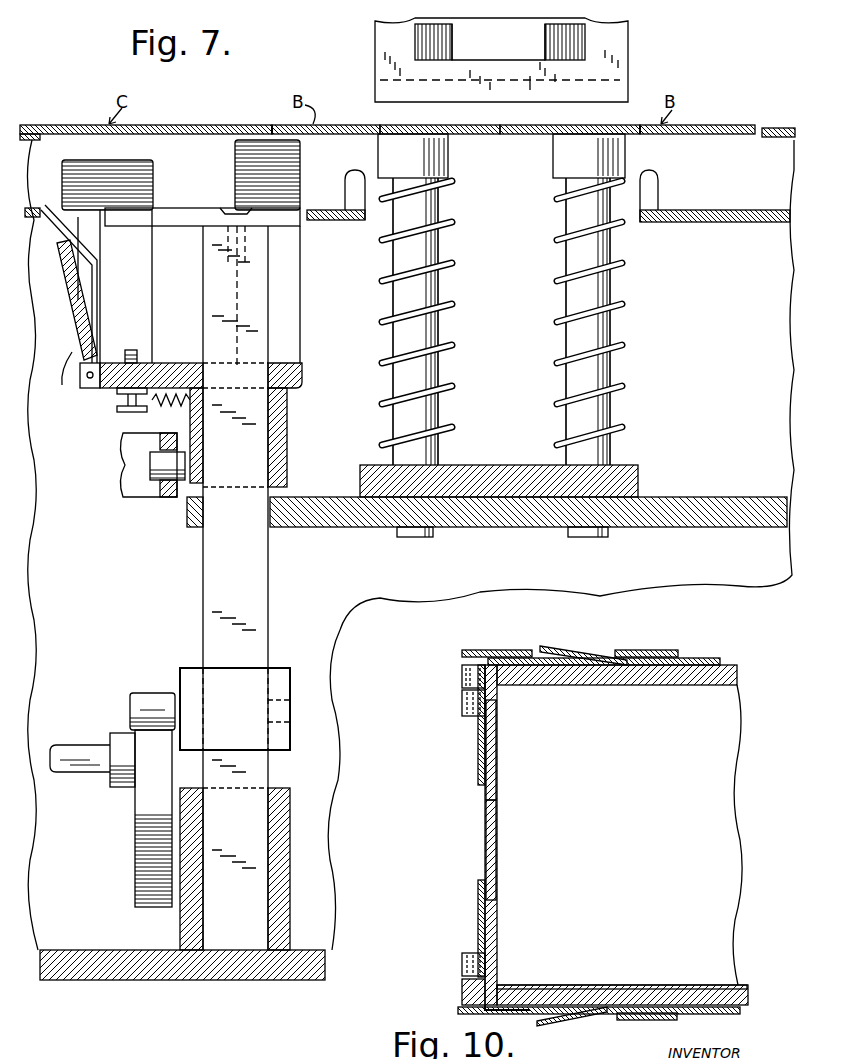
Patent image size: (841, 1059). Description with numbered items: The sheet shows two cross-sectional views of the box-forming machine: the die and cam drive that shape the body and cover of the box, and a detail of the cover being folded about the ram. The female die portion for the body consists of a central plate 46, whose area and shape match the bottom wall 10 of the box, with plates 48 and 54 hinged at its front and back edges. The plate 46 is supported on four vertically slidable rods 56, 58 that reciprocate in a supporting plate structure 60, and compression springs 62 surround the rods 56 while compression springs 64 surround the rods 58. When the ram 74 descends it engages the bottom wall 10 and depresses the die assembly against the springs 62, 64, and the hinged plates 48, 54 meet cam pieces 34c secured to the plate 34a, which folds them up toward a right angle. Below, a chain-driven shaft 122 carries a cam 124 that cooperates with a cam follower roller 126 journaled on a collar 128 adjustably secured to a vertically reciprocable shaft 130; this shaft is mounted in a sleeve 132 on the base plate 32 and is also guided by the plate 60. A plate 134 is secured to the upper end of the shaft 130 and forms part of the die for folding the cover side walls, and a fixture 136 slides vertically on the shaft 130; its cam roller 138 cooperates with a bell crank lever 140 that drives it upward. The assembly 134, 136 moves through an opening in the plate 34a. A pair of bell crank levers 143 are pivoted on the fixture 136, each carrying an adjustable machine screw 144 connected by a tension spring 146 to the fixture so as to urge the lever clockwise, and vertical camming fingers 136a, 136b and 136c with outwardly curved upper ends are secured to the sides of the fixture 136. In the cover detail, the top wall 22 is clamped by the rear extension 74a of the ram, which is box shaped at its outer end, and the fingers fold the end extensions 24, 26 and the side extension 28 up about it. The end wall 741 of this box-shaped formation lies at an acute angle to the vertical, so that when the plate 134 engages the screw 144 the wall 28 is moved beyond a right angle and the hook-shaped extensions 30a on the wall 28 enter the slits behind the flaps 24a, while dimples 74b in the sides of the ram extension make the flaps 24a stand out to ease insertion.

In FIG. 7, the bottom wall 10 is at (512, 130).
In FIG. 7, the top wall 22 is at (192, 124).
In FIG. 10, the end extension 24 is at (708, 1014).
In FIG. 10, the flap 24a is at (620, 1005).
In FIG. 10, the end extension 26 is at (705, 662).
In FIG. 10, the side extension 28 is at (485, 835).
In FIG. 10, the hook shaped extension 30a is at (533, 1002).
In FIG. 7, the base plate 32 is at (192, 980).
In FIG. 7, the plate 34a is at (333, 222).
In FIG. 7, the cam piece 34c is at (350, 192).
In FIG. 7, the central plate 46 is at (498, 136).
In FIG. 7, the hinged plate 48 is at (695, 136).
In FIG. 7, the hinged plate 54 is at (322, 135).
In FIG. 7, the rod 56 is at (428, 292).
In FIG. 7, the rod 58 is at (578, 292).
In FIG. 7, the supporting plate structure 60 is at (645, 506).
In FIG. 7, the compression spring 62 is at (446, 352).
In FIG. 7, the compression spring 64 is at (560, 362).
In FIG. 7, the ram 74 is at (620, 60).
In FIG. 10, the rear extension of the ram 74a is at (665, 833).
In FIG. 10, the dimple 74b is at (575, 668).
In FIG. 10, the end wall 741 is at (499, 760).
In FIG. 7, the shaft 122 is at (80, 750).
In FIG. 7, the cam 124 is at (135, 873).
In FIG. 7, the cam follower roller 126 is at (153, 692).
In FIG. 7, the collar 128 is at (290, 683).
In FIG. 7, the vertically reciprocable shaft 130 is at (268, 620).
In FIG. 7, the sleeve 132 is at (290, 815).
In FIG. 7, the plate 134 is at (194, 208).
In FIG. 7, the fixture 136 is at (290, 390).
In FIG. 7, the camming finger 136a is at (100, 287).
In FIG. 10, the camming finger 136a is at (480, 770).
In FIG. 10, the camming finger 136b is at (642, 1021).
In FIG. 7, the camming finger 136c is at (153, 165).
In FIG. 10, the camming finger 136c is at (630, 650).
In FIG. 7, the cam roller 138 is at (160, 484).
In FIG. 7, the bell crank lever 140 is at (124, 468).
In FIG. 7, the bell crank lever 143 is at (79, 376).
In FIG. 10, the bell crank lever 143 is at (462, 683).
In FIG. 7, the adjustable machine screw 144 is at (131, 350).
In FIG. 7, the tension spring 146 is at (160, 406).